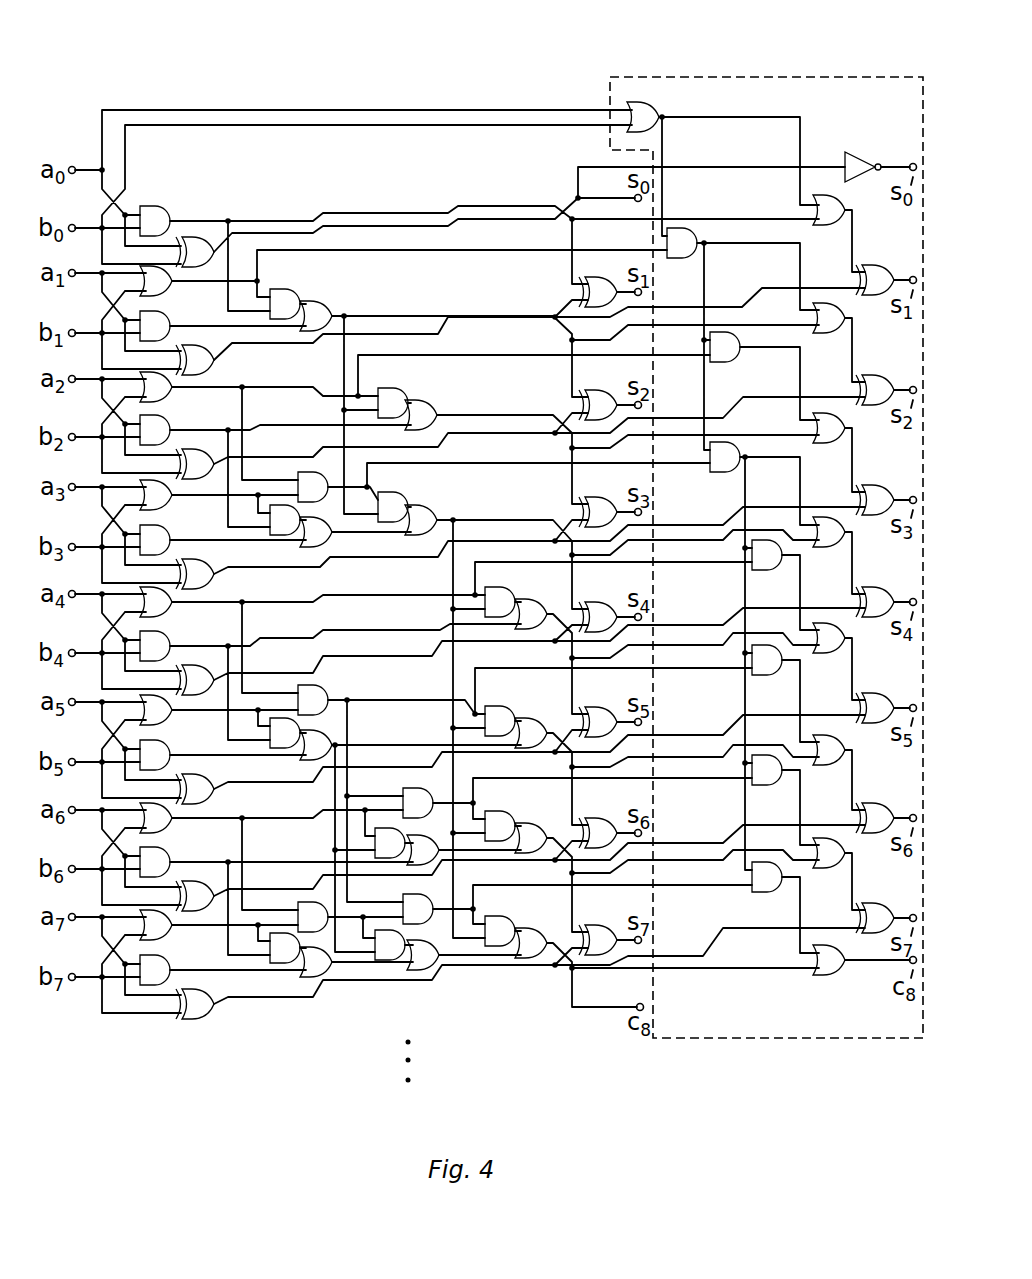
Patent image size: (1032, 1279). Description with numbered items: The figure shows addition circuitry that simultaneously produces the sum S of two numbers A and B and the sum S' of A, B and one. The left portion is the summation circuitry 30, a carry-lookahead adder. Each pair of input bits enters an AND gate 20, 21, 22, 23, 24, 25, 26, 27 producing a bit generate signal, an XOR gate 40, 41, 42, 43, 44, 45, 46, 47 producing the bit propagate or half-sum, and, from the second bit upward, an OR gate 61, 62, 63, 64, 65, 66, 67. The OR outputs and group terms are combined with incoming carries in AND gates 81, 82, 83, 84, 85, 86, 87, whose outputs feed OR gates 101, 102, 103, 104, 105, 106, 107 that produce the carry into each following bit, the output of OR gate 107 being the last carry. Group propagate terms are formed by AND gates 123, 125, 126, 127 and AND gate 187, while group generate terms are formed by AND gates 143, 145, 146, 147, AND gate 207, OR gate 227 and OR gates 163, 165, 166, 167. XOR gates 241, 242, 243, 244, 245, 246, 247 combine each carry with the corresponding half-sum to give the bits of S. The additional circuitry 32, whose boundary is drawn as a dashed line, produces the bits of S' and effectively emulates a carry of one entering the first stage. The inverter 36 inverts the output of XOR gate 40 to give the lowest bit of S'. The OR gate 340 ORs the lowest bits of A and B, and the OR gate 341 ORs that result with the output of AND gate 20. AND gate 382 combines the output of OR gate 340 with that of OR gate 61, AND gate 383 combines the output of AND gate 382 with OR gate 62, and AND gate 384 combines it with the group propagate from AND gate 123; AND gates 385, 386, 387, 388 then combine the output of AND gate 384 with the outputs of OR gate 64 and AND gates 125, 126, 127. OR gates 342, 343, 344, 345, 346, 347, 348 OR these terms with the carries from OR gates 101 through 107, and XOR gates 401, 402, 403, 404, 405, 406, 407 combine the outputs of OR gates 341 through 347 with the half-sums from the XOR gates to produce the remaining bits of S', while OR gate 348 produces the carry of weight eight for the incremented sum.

The AND gate 20 is at (146, 207).
The AND gate 21 is at (188, 318).
The AND gate 22 is at (188, 422).
The AND gate 23 is at (188, 532).
The AND gate 24 is at (188, 638).
The AND gate 25 is at (188, 747).
The AND gate 26 is at (188, 854).
The AND gate 27 is at (188, 962).
The XOR gate 40 is at (192, 265).
The XOR gate 41 is at (192, 376).
The XOR gate 42 is at (192, 480).
The XOR gate 43 is at (192, 590).
The XOR gate 44 is at (192, 696).
The XOR gate 45 is at (192, 805).
The XOR gate 46 is at (192, 912).
The XOR gate 47 is at (192, 1020).
The OR gate 61 is at (165, 294).
The OR gate 62 is at (165, 400).
The OR gate 63 is at (165, 508).
The OR gate 64 is at (165, 615).
The OR gate 65 is at (165, 723).
The OR gate 66 is at (165, 831).
The OR gate 67 is at (165, 938).
The AND gate 81 is at (280, 290).
The AND gate 82 is at (388, 389).
The AND gate 83 is at (388, 493).
The AND gate 84 is at (495, 588).
The AND gate 85 is at (495, 707).
The AND gate 86 is at (495, 812).
The AND gate 87 is at (495, 917).
The OR gate 101 is at (311, 307).
The OR gate 102 is at (416, 406).
The OR gate 103 is at (416, 511).
The OR gate 104 is at (526, 605).
The OR gate 105 is at (526, 724).
The OR gate 106 is at (526, 829).
The OR gate 107 is at (526, 934).
The AND gate 123 is at (298, 472).
The AND gate 125 is at (300, 685).
The AND gate 126 is at (405, 788).
The AND gate 127 is at (405, 895).
The AND gate 143 is at (286, 535).
The AND gate 145 is at (288, 748).
The AND gate 146 is at (372, 836).
The AND gate 147 is at (395, 960).
The OR gate 163 is at (324, 547).
The OR gate 165 is at (336, 740).
The OR gate 166 is at (416, 866).
The OR gate 167 is at (430, 971).
The AND gate 187 is at (300, 902).
The AND gate 207 is at (288, 963).
The OR gate 227 is at (322, 978).
The XOR gate 241 is at (577, 279).
The XOR gate 242 is at (577, 392).
The XOR gate 243 is at (577, 499).
The XOR gate 244 is at (586, 602).
The XOR gate 245 is at (586, 707).
The XOR gate 246 is at (586, 818).
The XOR gate 247 is at (586, 925).
The summation circuitry 30 is at (301, 85).
The additional circuitry 32 is at (648, 52).
The inverter 36 is at (855, 154).
The OR gate 340 is at (646, 102).
The OR gate 341 is at (826, 225).
The OR gate 342 is at (826, 333).
The OR gate 343 is at (826, 443).
The OR gate 344 is at (826, 547).
The OR gate 345 is at (826, 653).
The OR gate 346 is at (826, 765).
The OR gate 347 is at (826, 868).
The OR gate 348 is at (826, 975).
The AND gate 382 is at (704, 272).
The AND gate 383 is at (712, 362).
The AND gate 384 is at (712, 472).
The AND gate 385 is at (752, 570).
The AND gate 386 is at (752, 675).
The AND gate 387 is at (752, 785).
The AND gate 388 is at (752, 892).
The XOR gate 401 is at (866, 265).
The XOR gate 402 is at (866, 375).
The XOR gate 403 is at (866, 485).
The XOR gate 404 is at (866, 587).
The XOR gate 405 is at (866, 693).
The XOR gate 406 is at (866, 803).
The XOR gate 407 is at (866, 903).